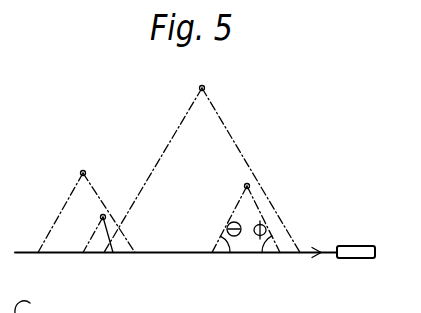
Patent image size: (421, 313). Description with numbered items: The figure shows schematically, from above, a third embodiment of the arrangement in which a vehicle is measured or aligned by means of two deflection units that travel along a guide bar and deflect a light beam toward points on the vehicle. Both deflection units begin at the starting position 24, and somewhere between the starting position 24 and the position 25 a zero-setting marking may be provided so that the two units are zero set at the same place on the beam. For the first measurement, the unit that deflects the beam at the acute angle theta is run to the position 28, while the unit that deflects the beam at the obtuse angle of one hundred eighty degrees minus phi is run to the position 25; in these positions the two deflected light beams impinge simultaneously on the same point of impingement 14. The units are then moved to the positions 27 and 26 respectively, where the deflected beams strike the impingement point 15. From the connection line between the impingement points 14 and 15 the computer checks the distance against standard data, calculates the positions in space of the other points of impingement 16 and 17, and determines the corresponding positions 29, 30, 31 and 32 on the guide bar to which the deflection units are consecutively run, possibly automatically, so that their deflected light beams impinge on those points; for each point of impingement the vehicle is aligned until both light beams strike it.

The point of impingement 14 is at (204, 86).
The impingement point 15 is at (250, 185).
The point of impingement 16 is at (85, 171).
The point of impingement 17 is at (106, 217).
The starting position 24 is at (320, 256).
The position 25 is at (299, 253).
The position 26 is at (279, 253).
The position 27 is at (209, 253).
The position 28 is at (104, 253).
The position 29 is at (135, 253).
The position 30 is at (112, 253).
The position 31 is at (82, 253).
The position 32 is at (40, 253).